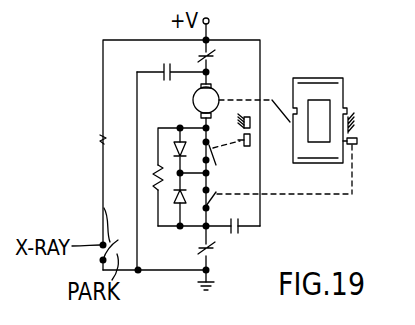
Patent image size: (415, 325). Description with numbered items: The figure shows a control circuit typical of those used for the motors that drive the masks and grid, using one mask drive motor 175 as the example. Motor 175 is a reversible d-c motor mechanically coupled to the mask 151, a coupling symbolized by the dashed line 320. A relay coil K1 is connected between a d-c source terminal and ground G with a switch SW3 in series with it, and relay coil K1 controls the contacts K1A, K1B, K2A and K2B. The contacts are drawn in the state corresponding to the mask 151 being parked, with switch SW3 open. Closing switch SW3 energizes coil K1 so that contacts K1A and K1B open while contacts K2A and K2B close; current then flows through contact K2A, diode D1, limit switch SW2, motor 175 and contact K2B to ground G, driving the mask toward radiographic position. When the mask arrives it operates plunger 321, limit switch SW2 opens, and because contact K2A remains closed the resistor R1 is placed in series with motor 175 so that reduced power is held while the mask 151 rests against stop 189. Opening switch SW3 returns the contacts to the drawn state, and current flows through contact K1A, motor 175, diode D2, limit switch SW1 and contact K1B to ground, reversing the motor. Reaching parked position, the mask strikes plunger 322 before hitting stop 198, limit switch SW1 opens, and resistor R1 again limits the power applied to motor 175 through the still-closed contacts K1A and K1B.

The mask drive motor 175 is at (216, 92).
The dashed line 320 is at (309, 124).
The mask 151 is at (307, 163).
The stop 198 is at (355, 125).
The plunger 322 is at (355, 145).
The stop 189 is at (250, 123).
The plunger 321 is at (247, 146).
The contact K1A is at (214, 55).
The contact K1B is at (213, 250).
The contact K2A is at (238, 233).
The contact K2B is at (166, 64).
The relay coil K1 is at (100, 137).
The resistor R1 is at (153, 178).
The diode D1 is at (176, 208).
The diode D2 is at (172, 142).
The limit switch SW1 is at (210, 206).
The limit switch SW2 is at (203, 141).
The switch SW3 is at (102, 208).
The ground G is at (200, 290).